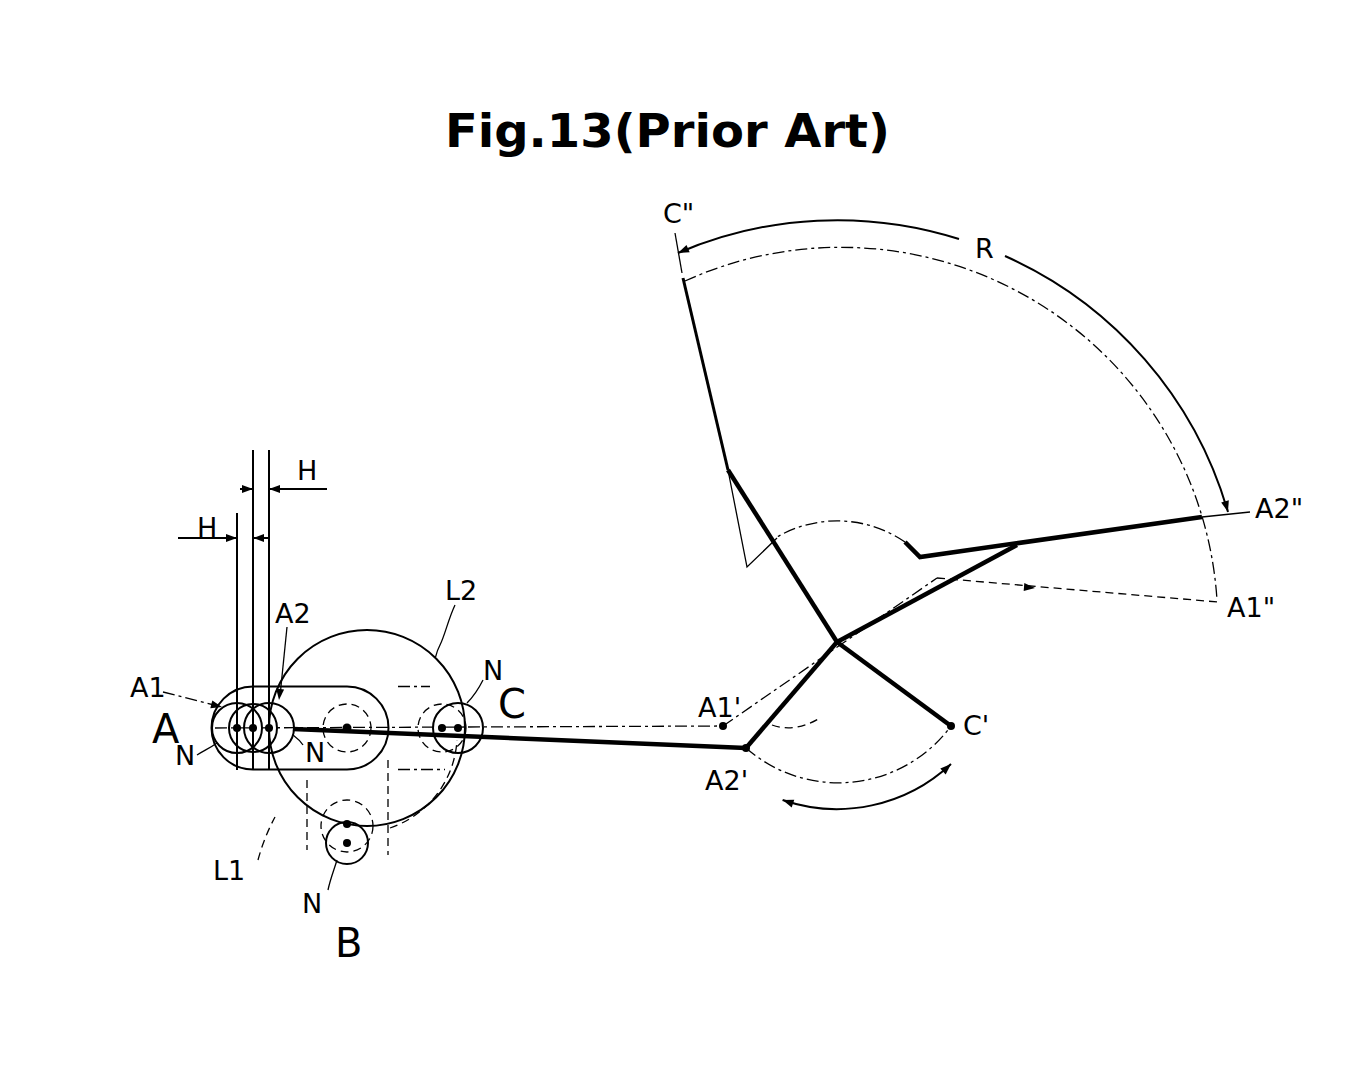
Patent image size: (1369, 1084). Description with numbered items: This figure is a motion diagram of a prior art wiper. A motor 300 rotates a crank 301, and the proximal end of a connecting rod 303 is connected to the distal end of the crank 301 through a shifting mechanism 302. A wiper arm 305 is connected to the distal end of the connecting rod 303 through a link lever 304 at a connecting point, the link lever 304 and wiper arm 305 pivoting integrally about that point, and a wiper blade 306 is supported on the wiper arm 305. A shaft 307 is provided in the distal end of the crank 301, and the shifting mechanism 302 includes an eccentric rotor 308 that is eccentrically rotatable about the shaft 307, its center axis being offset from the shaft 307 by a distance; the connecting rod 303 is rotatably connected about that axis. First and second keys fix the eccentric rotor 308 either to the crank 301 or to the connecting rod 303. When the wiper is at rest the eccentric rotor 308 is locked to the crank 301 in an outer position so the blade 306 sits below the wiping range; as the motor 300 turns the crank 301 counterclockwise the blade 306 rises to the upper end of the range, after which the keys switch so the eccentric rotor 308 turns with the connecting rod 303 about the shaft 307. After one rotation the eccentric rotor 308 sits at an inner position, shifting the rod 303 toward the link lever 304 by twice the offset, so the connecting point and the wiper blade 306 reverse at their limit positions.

The motor 300 is at (342, 700).
The crank 301 is at (342, 770).
The shifting mechanism 302 is at (230, 695).
The connecting rod 303 is at (700, 745).
The link lever 304 is at (800, 688).
The wiper arm 305 is at (907, 604).
The wiper blade 306 is at (1140, 653).
The shaft 307 is at (444, 720).
The eccentric rotor 308 is at (280, 692).